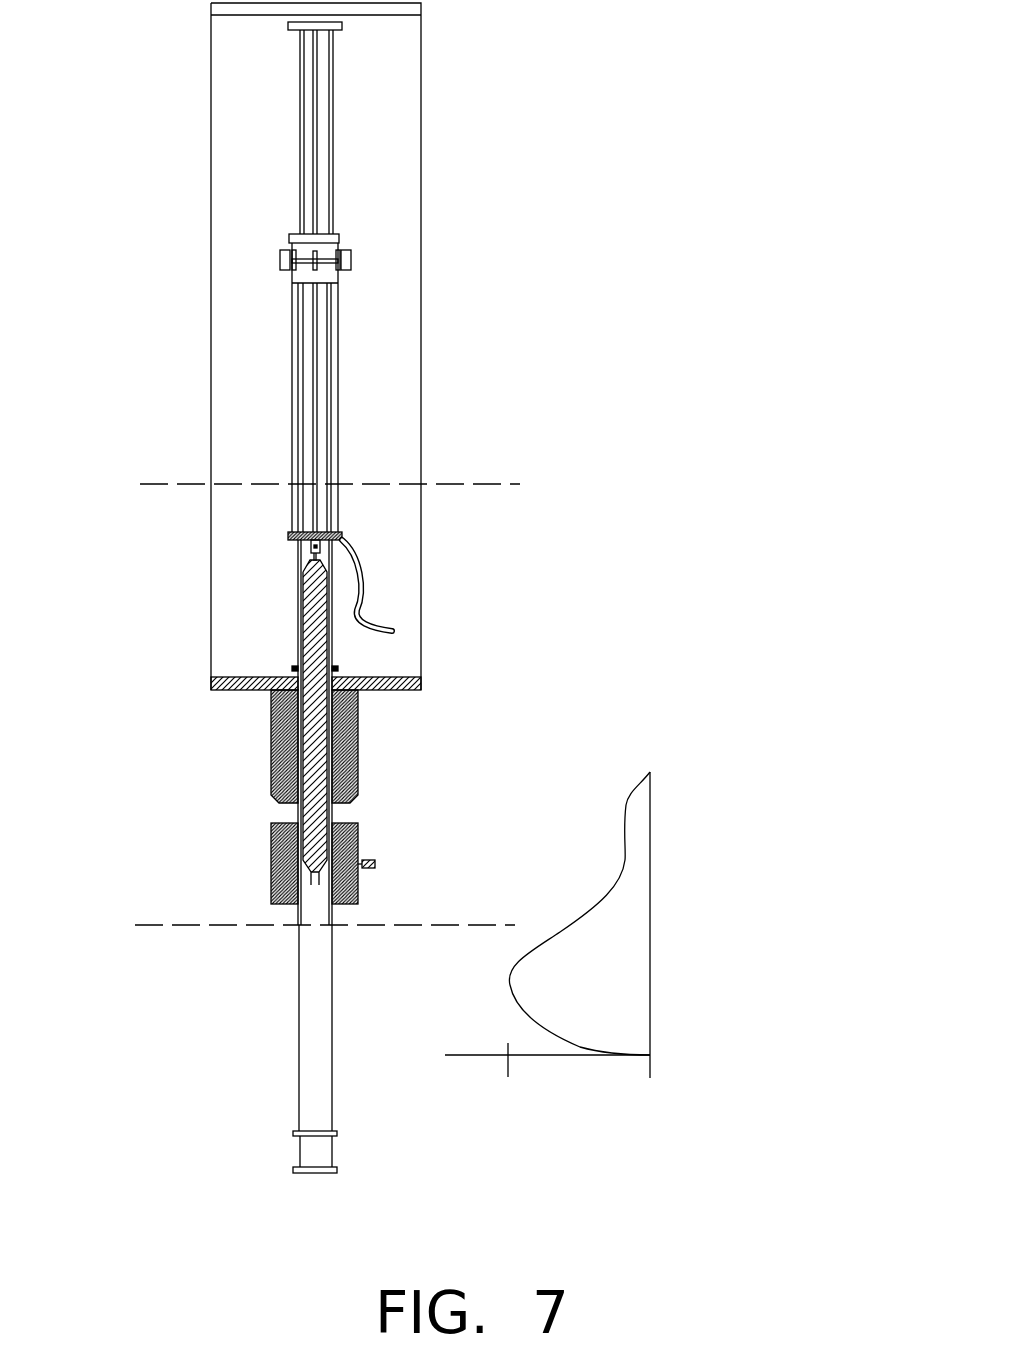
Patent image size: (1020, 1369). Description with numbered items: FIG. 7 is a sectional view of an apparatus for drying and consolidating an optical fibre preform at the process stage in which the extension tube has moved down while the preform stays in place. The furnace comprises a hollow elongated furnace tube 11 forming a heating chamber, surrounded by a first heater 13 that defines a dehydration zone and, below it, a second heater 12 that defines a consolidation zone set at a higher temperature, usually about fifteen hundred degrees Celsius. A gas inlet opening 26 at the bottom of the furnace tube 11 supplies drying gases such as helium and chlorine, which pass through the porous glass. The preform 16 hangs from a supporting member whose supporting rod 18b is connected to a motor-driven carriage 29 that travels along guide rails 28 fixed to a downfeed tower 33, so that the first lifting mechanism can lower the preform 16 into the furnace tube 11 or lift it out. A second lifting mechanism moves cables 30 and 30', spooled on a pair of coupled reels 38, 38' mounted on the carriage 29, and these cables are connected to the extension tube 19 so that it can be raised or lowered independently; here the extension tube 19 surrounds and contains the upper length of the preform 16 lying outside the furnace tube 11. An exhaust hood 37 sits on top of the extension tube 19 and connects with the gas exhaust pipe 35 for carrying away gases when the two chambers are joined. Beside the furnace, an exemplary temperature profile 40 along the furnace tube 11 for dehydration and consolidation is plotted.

The furnace tube 11 is at (302, 1008).
The second heater 12 is at (275, 868).
The first heater 13 is at (288, 745).
The preform 16 is at (318, 641).
The supporting rod 18b is at (320, 407).
The extension tube 19 is at (299, 603).
The gas inlet opening 26 is at (306, 1150).
The guide rails 28 is at (300, 183).
The carriage 29 is at (333, 247).
The cable 30 is at (208, 387).
The cable 30' is at (417, 387).
The downfeed tower 33 is at (421, 110).
The gas exhaust pipe 35 is at (362, 590).
The exhaust hood 37 is at (342, 532).
The reel 38 is at (254, 467).
The reel 38' is at (469, 272).
The temperature profile 40 is at (688, 812).